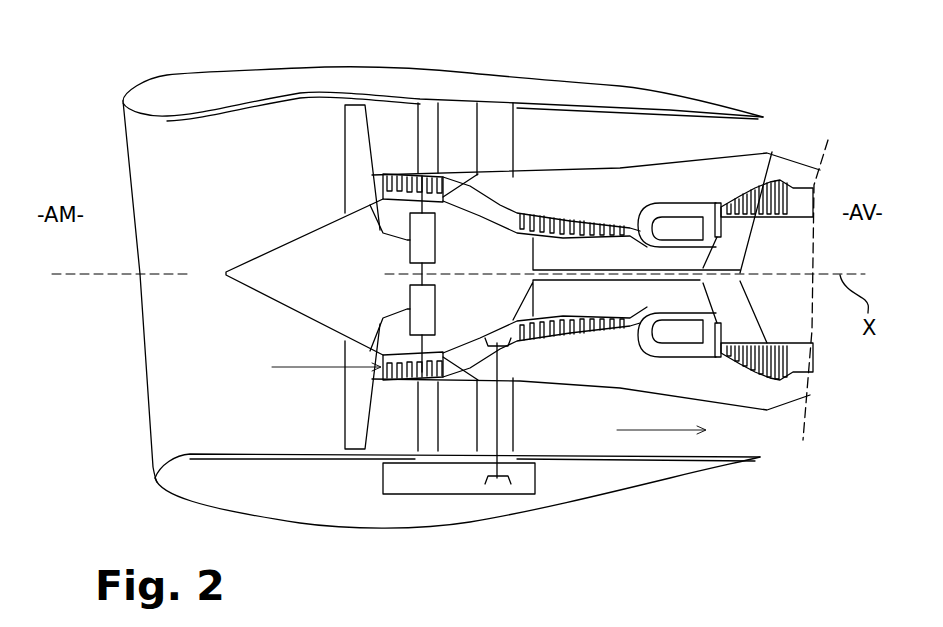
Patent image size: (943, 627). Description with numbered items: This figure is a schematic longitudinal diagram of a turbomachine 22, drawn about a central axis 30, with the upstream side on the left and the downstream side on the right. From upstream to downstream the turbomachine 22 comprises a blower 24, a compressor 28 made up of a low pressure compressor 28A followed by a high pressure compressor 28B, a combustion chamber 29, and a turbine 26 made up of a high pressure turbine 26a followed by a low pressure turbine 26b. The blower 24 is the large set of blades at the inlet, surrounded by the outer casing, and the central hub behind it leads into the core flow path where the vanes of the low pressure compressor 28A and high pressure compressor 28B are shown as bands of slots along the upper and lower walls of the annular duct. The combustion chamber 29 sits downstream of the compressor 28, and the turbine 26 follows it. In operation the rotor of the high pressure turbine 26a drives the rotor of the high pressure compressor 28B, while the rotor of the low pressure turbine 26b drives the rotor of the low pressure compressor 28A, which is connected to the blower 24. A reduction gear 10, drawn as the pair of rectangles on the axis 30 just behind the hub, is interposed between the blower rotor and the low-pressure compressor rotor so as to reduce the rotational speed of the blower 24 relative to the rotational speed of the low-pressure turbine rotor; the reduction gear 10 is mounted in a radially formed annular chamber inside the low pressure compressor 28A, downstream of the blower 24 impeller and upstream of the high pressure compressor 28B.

The reduction gear 10 is at (400, 293).
The turbomachine 22 is at (660, 66).
The blower 24 is at (345, 140).
The turbine 26 is at (765, 168).
The high pressure turbine 26a is at (713, 203).
The low pressure turbine 26b is at (790, 376).
The compressor 28 is at (526, 182).
The low pressure compressor 28A is at (403, 168).
The high pressure compressor 28B is at (568, 222).
The combustion chamber 29 is at (672, 348).
The longitudinal axis 30 is at (458, 320).